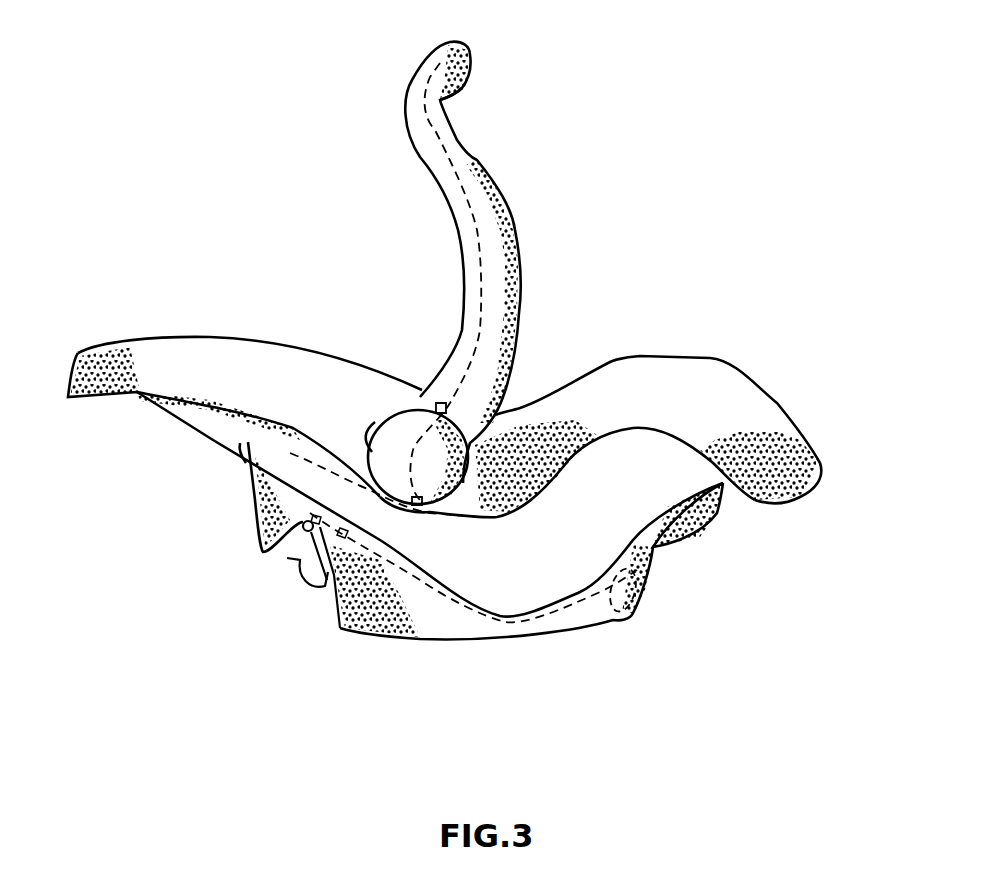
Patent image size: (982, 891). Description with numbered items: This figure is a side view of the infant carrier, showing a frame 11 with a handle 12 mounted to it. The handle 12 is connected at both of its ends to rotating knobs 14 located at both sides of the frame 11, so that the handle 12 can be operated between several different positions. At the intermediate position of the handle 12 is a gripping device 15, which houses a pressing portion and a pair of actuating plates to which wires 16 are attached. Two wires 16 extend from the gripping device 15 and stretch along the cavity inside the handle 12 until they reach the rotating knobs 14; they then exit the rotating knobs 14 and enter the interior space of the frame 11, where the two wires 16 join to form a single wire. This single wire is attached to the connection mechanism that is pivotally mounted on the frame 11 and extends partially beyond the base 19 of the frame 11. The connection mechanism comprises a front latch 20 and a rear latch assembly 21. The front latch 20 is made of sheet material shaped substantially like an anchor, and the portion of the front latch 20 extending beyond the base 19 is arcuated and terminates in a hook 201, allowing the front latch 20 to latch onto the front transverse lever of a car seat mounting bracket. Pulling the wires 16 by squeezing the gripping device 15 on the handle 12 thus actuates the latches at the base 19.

The frame 11 is at (720, 358).
The handle 12 is at (510, 226).
The rotating knob 14 is at (455, 425).
The gripping device 15 is at (463, 88).
The wire 16 is at (287, 447).
The base 19 is at (203, 418).
The front latch 20 is at (320, 580).
The hook 201 is at (287, 558).
The rear latch assembly 21 is at (640, 592).